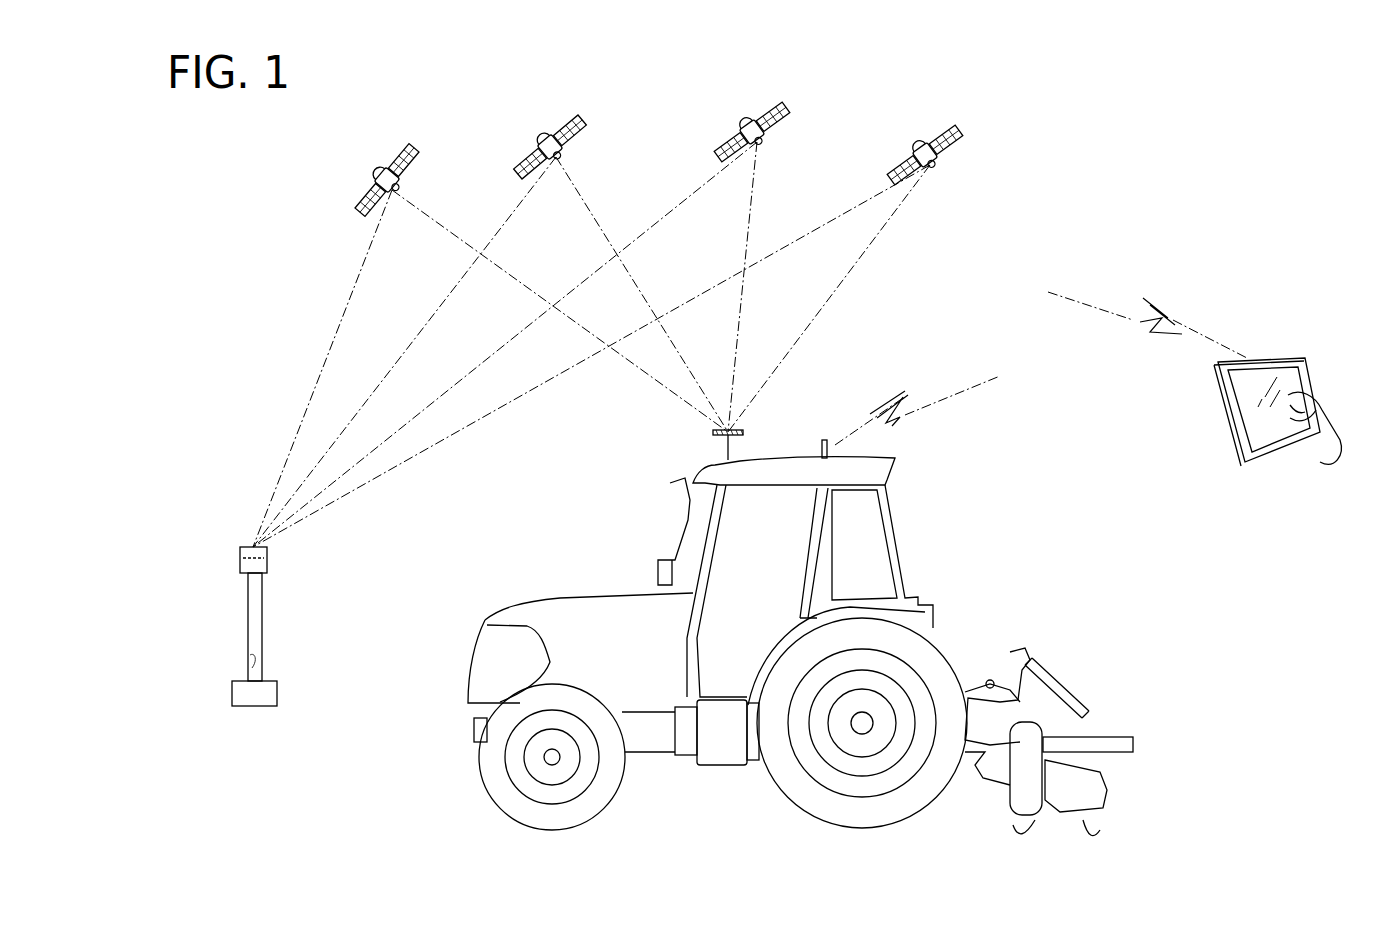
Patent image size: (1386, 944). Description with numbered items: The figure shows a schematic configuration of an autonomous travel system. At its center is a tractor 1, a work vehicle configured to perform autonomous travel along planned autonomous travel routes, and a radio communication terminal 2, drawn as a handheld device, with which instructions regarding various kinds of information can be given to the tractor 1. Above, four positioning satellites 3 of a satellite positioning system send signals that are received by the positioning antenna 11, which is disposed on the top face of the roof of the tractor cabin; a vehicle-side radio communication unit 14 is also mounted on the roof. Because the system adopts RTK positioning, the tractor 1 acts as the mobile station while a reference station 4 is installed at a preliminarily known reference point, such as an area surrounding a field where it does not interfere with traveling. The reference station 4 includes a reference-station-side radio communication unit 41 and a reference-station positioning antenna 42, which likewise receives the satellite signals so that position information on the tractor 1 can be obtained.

The tractor 1 is at (800, 598).
The radio communication terminal 2 is at (1285, 357).
The positioning satellite 3 is at (408, 160).
The reference station 4 is at (260, 590).
The positioning antenna 11 is at (742, 448).
The vehicle-side radio communication unit 14 is at (824, 440).
The reference-station-side radio communication unit 41 is at (245, 665).
The reference-station positioning antenna 42 is at (248, 545).